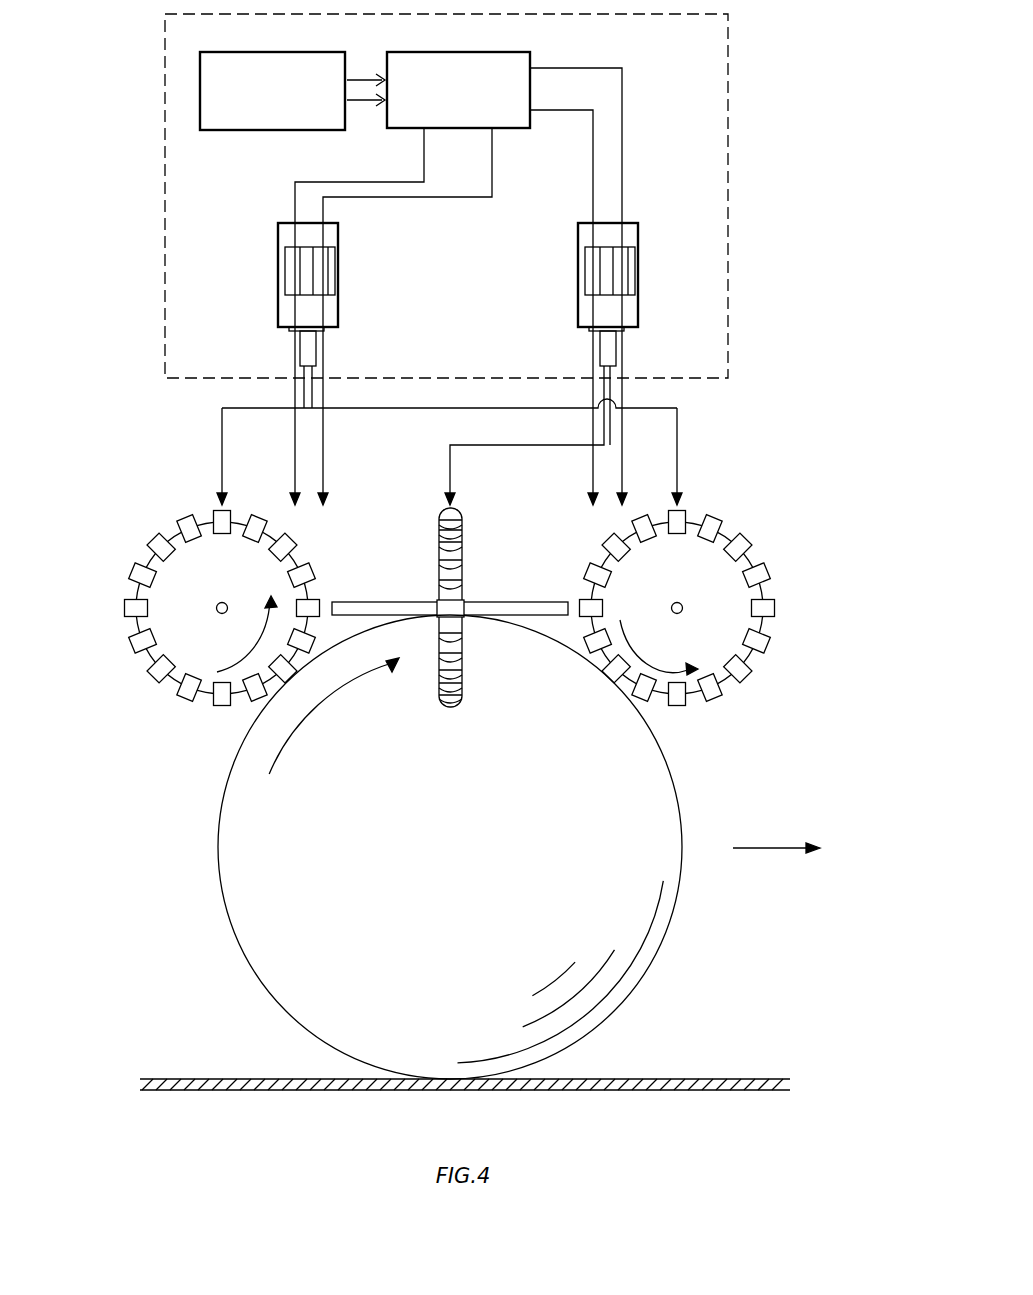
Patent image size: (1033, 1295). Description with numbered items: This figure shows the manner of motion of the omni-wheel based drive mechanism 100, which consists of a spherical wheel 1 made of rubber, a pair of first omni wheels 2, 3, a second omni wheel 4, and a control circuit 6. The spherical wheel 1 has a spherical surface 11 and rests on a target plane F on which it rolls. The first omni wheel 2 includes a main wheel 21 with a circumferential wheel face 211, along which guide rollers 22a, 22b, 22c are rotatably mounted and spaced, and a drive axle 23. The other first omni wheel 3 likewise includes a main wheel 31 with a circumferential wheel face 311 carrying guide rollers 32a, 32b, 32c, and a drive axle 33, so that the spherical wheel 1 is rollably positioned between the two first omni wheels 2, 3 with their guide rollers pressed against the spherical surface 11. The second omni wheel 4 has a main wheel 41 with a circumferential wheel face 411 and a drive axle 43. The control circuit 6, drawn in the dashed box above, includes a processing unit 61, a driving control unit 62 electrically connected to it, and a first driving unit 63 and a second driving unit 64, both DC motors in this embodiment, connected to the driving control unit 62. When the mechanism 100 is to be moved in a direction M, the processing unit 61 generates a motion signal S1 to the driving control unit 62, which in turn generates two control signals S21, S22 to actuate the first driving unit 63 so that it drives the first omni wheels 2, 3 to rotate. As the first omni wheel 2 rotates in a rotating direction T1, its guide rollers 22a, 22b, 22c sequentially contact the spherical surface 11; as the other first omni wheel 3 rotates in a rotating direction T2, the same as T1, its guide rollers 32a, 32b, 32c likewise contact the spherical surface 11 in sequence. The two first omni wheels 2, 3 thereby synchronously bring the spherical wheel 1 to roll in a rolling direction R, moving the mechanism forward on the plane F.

The omni-wheel based drive mechanism 100 is at (770, 125).
The spherical wheel 1 is at (477, 847).
The spherical surface 11 is at (660, 953).
The first omni wheel 2 is at (676, 614).
The main wheel 21 is at (740, 622).
The circumferential wheel face 211 is at (763, 550).
The guide roller 22a is at (615, 668).
The guide roller 22b is at (590, 642).
The guide roller 22c is at (582, 612).
The drive axle 23 is at (682, 612).
The first omni wheel 3 is at (189, 630).
The main wheel 31 is at (165, 620).
The circumferential wheel face 311 is at (145, 555).
The guide roller 32a is at (290, 673).
The guide roller 32b is at (257, 693).
The guide roller 32c is at (222, 707).
The drive axle 33 is at (220, 612).
The second omni wheel 4 is at (450, 583).
The main wheel 41 is at (448, 590).
The circumferential wheel face 411 is at (463, 557).
The drive axle 43 is at (492, 610).
The control circuit 6 is at (190, 235).
The processing unit 61 is at (238, 122).
The driving control unit 62 is at (508, 120).
The first driving unit 63 is at (328, 310).
The second driving unit 64 is at (590, 310).
The motion signal S1 is at (366, 88).
The control signal S21 is at (424, 158).
The control signal S22 is at (446, 197).
The rotating direction T1 is at (665, 665).
The rotating direction T2 is at (258, 650).
The rolling direction R is at (322, 700).
The direction M is at (775, 848).
The target plane F is at (735, 1079).